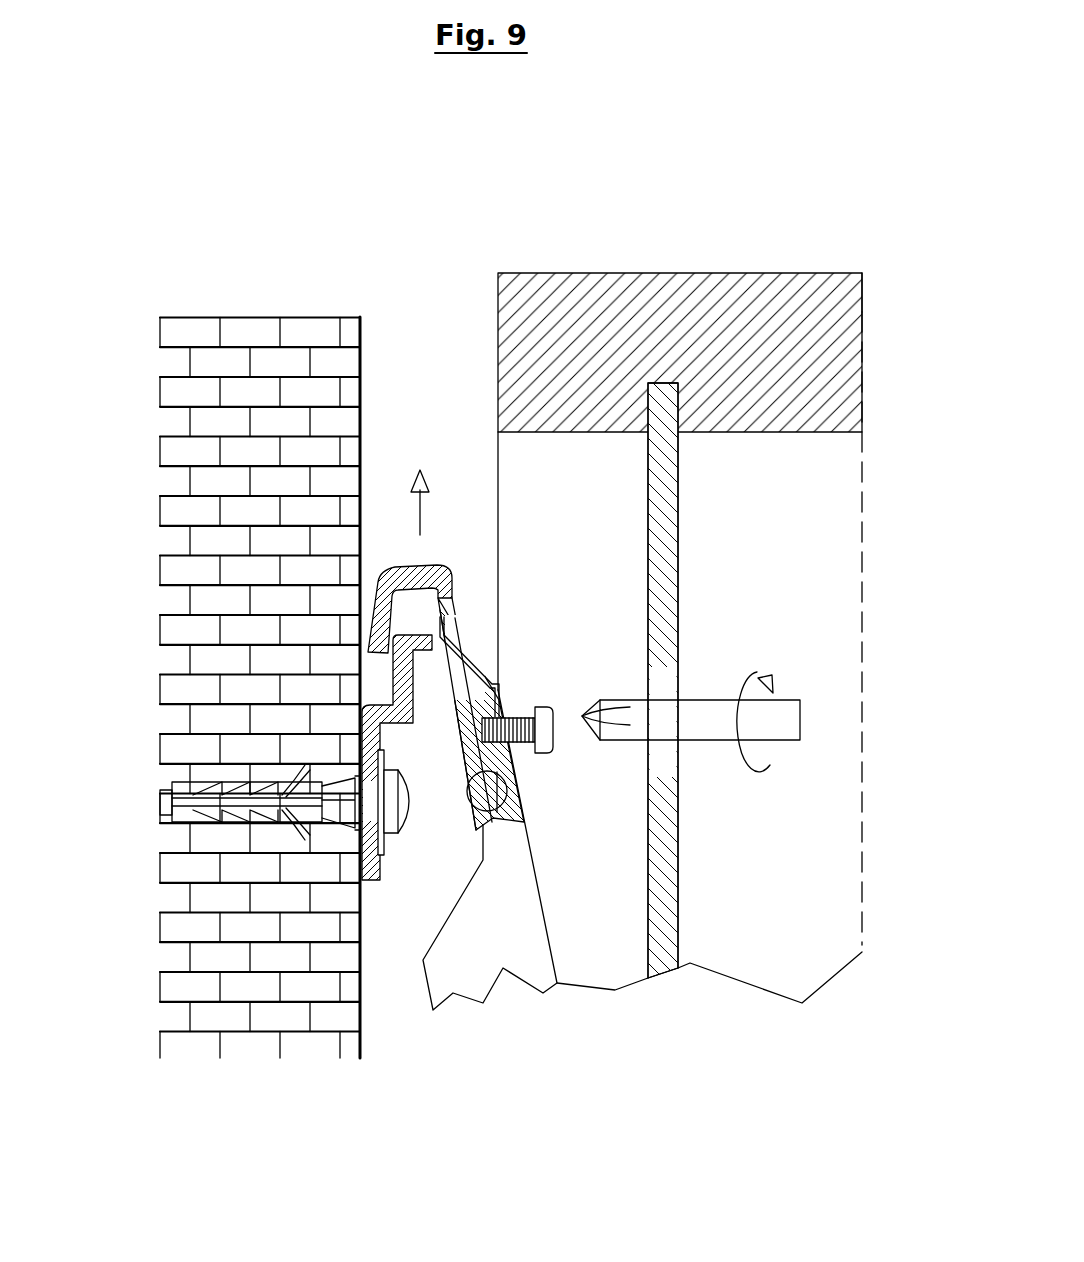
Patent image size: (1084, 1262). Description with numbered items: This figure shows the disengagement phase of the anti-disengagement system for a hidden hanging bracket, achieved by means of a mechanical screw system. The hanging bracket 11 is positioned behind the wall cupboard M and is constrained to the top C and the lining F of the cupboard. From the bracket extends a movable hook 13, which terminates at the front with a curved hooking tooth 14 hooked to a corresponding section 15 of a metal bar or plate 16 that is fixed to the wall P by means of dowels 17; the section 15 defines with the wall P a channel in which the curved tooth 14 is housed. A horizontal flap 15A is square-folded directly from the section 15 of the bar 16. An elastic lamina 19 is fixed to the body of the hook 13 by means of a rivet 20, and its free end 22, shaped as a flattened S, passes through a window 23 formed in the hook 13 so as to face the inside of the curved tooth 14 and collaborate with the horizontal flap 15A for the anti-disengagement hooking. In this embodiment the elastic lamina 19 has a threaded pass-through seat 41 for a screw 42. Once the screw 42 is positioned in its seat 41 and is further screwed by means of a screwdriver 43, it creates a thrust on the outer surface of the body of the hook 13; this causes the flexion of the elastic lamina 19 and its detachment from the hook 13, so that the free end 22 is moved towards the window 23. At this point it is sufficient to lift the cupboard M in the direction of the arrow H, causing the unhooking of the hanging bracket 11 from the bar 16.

The wall P is at (267, 367).
The top C is at (773, 288).
The wall cupboard M is at (703, 240).
The lining F is at (673, 463).
The arrow H is at (412, 502).
The hanging bracket 11 is at (397, 442).
The hook 13 is at (500, 943).
The curved hooking tooth 14 is at (368, 638).
The section 15 is at (395, 678).
The horizontal flap 15A is at (413, 655).
The metal bar or plate 16 is at (374, 887).
The dowels 17 is at (200, 808).
The elastic lamina 19 is at (505, 687).
The rivet 20 is at (505, 788).
The free end 22 is at (484, 600).
The window 23 is at (450, 614).
The threaded pass-through seat 41 is at (515, 744).
The screw 42 is at (557, 712).
The screwdriver 43 is at (773, 717).